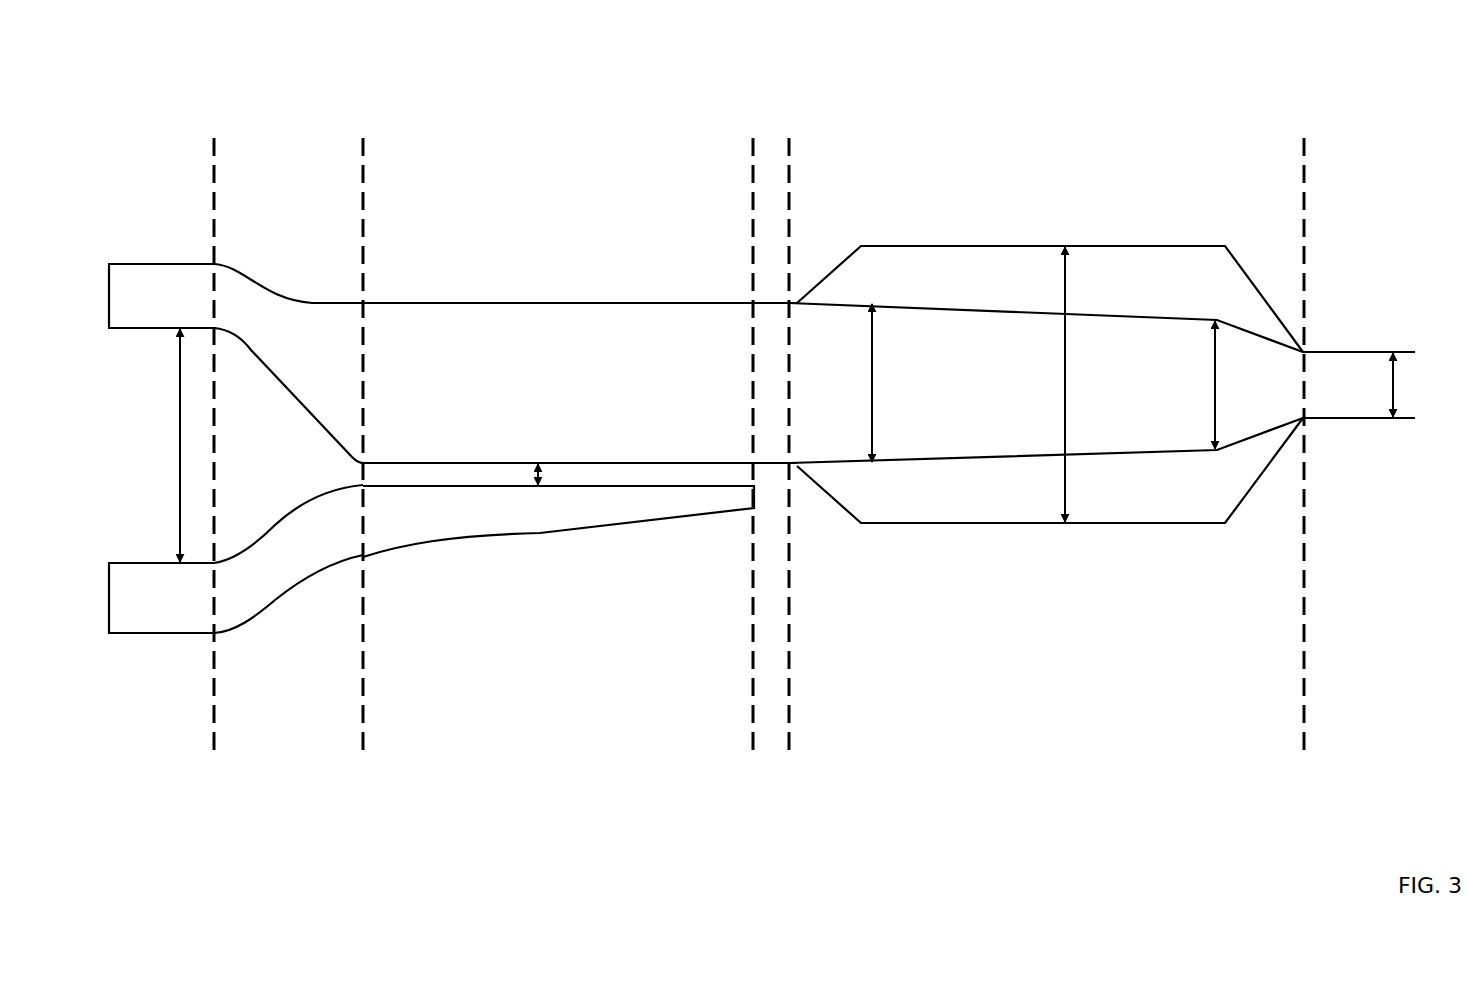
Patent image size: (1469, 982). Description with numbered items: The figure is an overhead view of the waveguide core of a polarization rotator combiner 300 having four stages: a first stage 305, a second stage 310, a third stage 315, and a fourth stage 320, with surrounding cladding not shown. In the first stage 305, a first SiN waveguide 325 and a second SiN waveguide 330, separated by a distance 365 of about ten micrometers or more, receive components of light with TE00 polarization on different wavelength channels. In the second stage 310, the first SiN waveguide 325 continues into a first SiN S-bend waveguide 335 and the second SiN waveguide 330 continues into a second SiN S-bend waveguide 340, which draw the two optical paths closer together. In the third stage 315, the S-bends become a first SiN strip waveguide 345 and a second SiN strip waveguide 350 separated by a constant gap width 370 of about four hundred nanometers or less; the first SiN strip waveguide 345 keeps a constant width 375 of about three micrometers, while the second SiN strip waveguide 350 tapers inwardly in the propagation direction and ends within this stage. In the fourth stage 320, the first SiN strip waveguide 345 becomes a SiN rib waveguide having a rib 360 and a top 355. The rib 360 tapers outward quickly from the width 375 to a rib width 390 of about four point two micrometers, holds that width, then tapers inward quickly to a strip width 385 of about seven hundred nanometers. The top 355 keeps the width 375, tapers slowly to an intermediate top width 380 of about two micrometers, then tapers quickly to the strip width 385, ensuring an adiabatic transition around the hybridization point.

The polarization rotator combiner 300 is at (1254, 62).
The first stage 305 is at (151, 113).
The second stage 310 is at (297, 113).
The third stage 315 is at (588, 113).
The fourth stage 320 is at (1101, 113).
The first SiN waveguide 325 is at (136, 262).
The second SiN waveguide 330 is at (131, 561).
The first SiN S-bend waveguide 335 is at (288, 296).
The second SiN S-bend waveguide 340 is at (268, 517).
The first SiN strip waveguide 345 is at (542, 301).
The second SiN strip waveguide 350 is at (567, 533).
The top 355 is at (948, 301).
The rib 360 is at (1134, 244).
The distance 365 is at (177, 438).
The gap width 370 is at (534, 478).
The width 375 is at (868, 399).
The intermediate top width 380 is at (1209, 399).
The strip width 385 is at (1387, 399).
The rib width 390 is at (1062, 374).